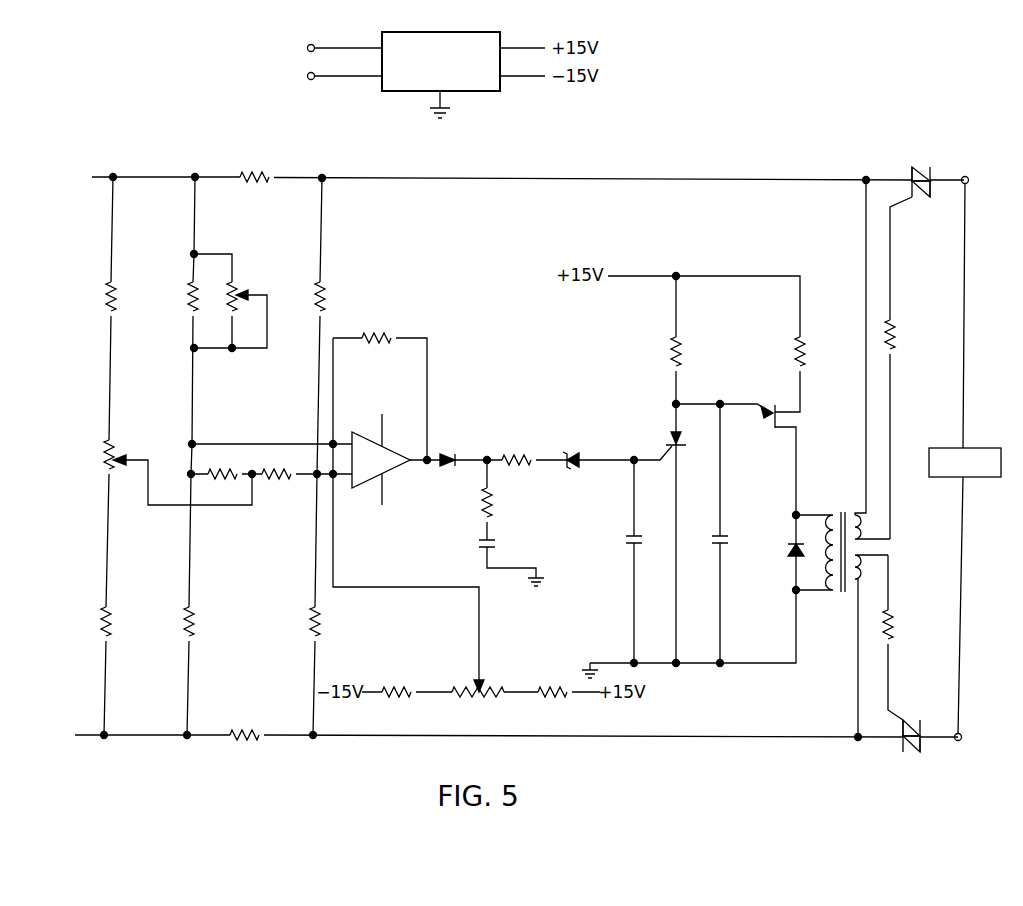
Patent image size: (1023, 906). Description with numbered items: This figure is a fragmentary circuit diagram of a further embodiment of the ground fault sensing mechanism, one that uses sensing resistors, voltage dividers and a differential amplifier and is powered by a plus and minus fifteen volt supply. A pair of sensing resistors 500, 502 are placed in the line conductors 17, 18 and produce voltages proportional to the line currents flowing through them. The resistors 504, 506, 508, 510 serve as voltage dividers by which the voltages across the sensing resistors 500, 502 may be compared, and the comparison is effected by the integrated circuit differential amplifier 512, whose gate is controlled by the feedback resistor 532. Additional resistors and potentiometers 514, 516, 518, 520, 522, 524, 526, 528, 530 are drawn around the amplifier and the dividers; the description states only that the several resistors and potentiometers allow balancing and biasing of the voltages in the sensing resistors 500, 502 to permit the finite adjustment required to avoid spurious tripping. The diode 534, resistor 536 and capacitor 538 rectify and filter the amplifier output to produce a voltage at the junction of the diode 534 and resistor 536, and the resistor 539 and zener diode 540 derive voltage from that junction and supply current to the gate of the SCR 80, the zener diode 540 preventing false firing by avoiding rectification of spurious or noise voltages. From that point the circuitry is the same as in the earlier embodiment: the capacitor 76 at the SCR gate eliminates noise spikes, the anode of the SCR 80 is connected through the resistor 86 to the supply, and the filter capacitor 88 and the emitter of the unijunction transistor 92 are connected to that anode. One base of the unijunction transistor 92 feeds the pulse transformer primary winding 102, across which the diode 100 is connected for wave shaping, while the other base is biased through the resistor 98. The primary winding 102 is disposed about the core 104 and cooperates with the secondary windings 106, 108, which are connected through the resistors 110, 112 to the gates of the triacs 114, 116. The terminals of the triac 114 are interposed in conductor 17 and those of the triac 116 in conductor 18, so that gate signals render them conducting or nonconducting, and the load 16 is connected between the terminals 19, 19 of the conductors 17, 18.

The load 16 is at (993, 446).
The conductor 17 is at (553, 178).
The conductor 18 is at (401, 744).
The terminals 19 is at (969, 178).
The capacitor 76 is at (642, 541).
The SCR 80 is at (661, 440).
The resistor 86 is at (689, 347).
The capacitor 88 is at (730, 541).
The unijunction transistor 92 is at (766, 430).
The resistor 98 is at (810, 353).
The diode 100 is at (781, 552).
The pulse transformer primary winding 102 is at (829, 521).
The core 104 is at (840, 592).
The secondary winding 106 is at (849, 511).
The secondary winding 108 is at (851, 597).
The resistor 110 is at (903, 339).
The resistor 112 is at (898, 627).
The triac 114 is at (925, 160).
The triac 116 is at (906, 764).
The sensing resistor 500 is at (272, 172).
The sensing resistor 502 is at (247, 742).
The resistor 504 is at (183, 307).
The resistor 506 is at (329, 300).
The resistor 508 is at (181, 631).
The resistor 510 is at (305, 626).
The integrated circuit differential amplifier 512 is at (397, 470).
The resistor 514 is at (118, 623).
The resistor 516 is at (127, 287).
The resistor 518 is at (235, 470).
The resistor 520 is at (283, 481).
The resistor 522 is at (400, 700).
The resistor 524 is at (558, 700).
The potentiometer 526 is at (125, 448).
The potentiometer 528 is at (242, 290).
The offset potentiometer 530 is at (495, 686).
The feedback resistor 532 is at (385, 330).
The diode 534 is at (452, 448).
The resistor 536 is at (500, 516).
The capacitor 538 is at (498, 551).
The resistor 539 is at (520, 446).
The zener diode 540 is at (573, 448).